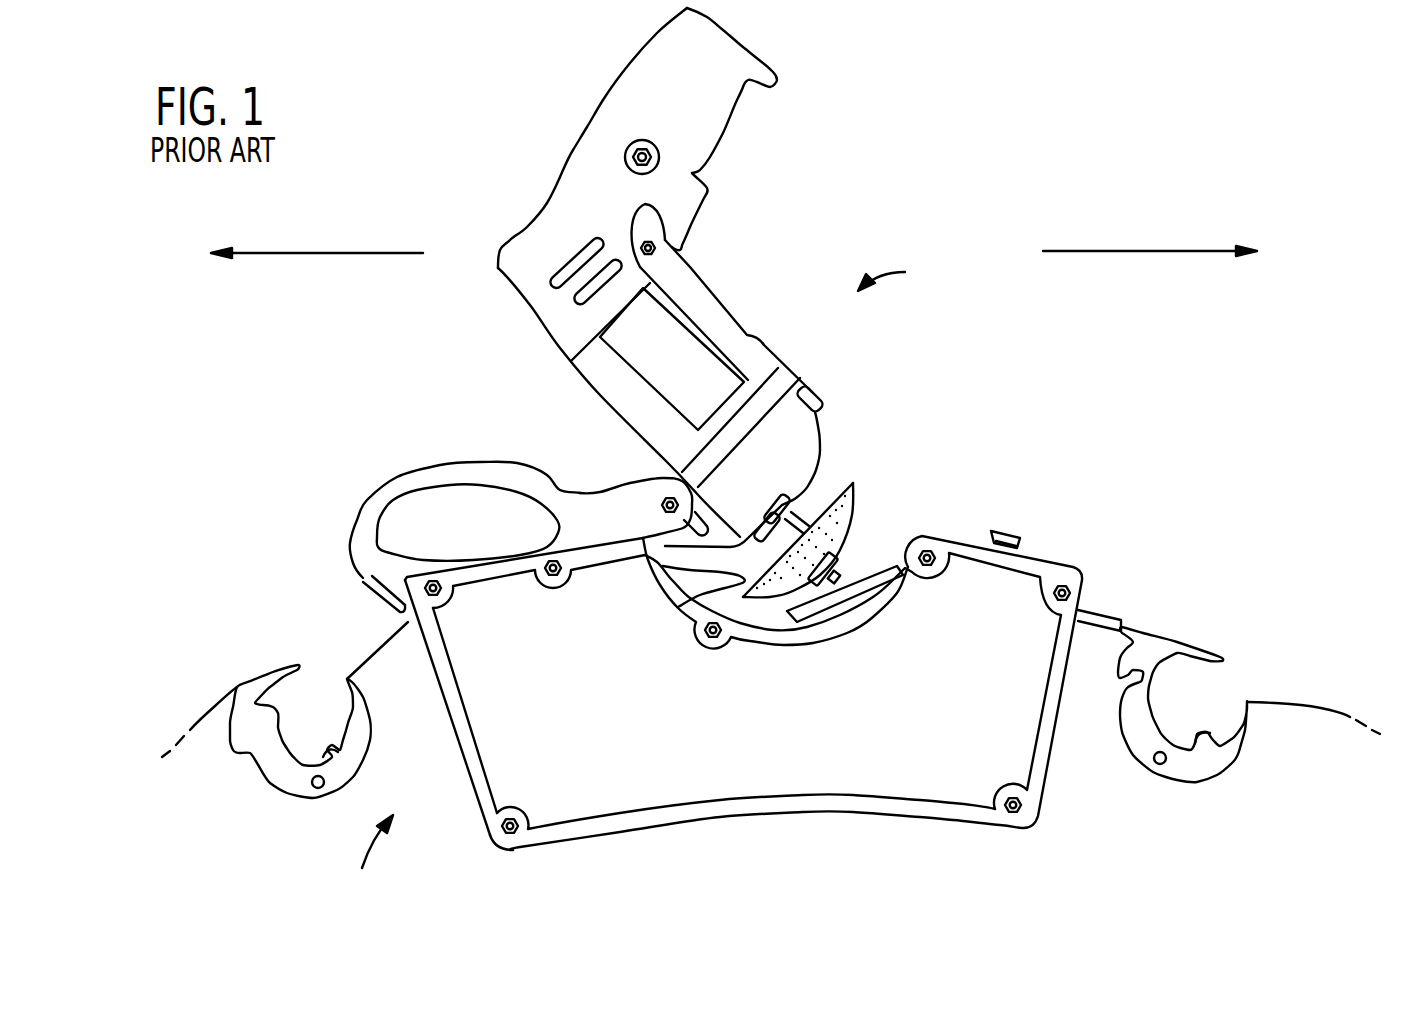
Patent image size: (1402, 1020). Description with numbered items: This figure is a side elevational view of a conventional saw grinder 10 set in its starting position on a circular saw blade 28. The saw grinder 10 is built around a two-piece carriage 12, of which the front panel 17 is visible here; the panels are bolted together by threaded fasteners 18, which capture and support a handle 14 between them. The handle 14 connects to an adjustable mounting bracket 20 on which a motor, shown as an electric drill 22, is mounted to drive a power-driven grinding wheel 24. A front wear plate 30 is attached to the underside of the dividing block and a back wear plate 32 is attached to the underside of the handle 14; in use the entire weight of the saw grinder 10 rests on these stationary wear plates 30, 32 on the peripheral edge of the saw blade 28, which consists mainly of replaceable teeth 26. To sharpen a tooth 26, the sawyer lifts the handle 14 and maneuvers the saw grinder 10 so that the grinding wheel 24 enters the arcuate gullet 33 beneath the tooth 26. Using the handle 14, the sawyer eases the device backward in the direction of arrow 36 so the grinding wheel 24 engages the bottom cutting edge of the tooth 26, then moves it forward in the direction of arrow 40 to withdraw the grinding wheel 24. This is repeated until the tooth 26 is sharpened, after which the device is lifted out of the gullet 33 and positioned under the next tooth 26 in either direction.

The saw grinder 10 is at (899, 271).
The two-piece carriage 12 is at (948, 783).
The handle 14 is at (412, 492).
The front panel 17 is at (487, 740).
The threaded fasteners 18 is at (568, 558).
The adjustable mounting bracket 20 is at (663, 477).
The electric drill 22 is at (710, 318).
The grinding wheel 24 is at (842, 498).
The replaceable teeth 26 is at (713, 582).
The circular saw blade 28 is at (374, 859).
The front wear plate 30 is at (1115, 612).
The back wear plate 32 is at (395, 604).
The gullet 33 is at (330, 745).
The arrow (backward direction) 36 is at (310, 253).
The arrow (forward direction) 40 is at (1155, 250).